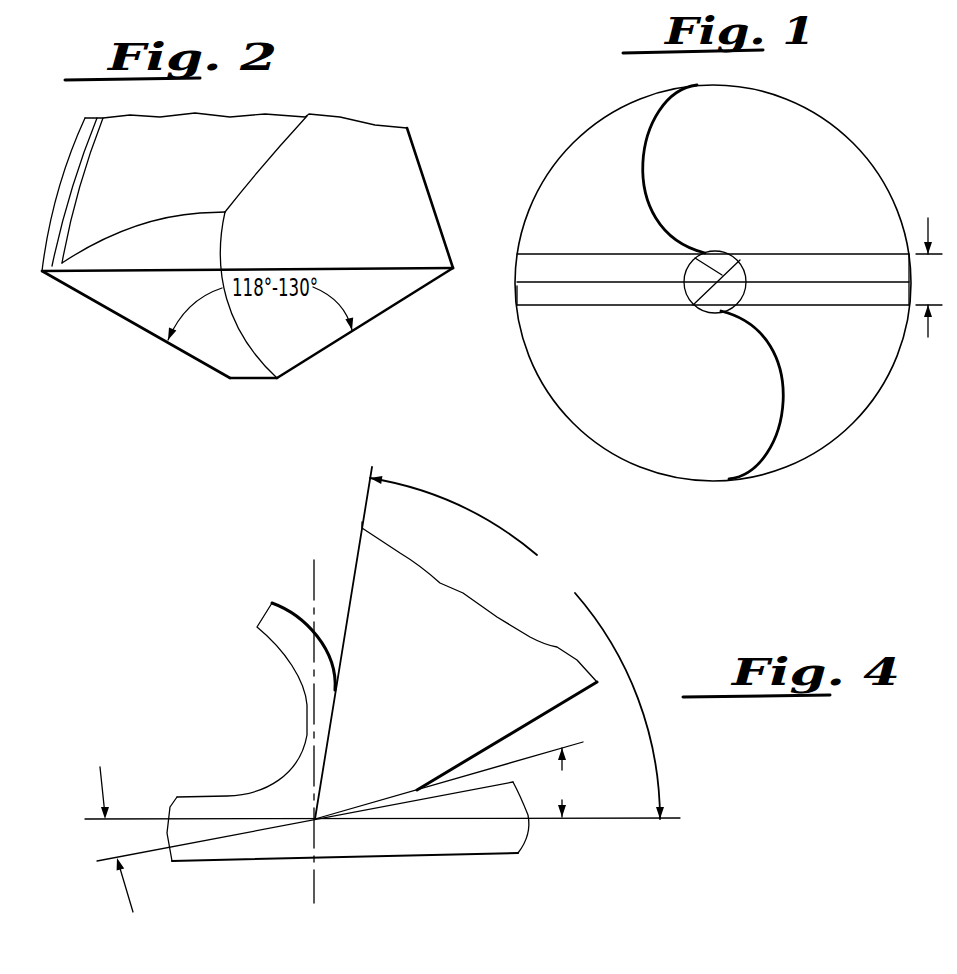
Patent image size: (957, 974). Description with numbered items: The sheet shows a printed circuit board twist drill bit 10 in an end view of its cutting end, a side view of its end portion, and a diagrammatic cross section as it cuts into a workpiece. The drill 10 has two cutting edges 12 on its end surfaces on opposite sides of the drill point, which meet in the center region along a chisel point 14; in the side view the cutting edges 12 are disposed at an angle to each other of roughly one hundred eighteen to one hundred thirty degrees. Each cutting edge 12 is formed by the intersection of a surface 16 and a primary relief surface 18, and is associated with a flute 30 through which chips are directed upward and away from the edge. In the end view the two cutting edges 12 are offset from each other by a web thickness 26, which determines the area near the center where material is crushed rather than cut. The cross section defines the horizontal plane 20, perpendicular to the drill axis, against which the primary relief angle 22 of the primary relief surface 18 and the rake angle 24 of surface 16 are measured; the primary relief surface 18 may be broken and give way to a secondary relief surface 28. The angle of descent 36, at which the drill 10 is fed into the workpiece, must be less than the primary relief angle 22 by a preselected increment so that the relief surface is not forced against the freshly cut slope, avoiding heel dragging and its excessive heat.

In FIG. 2, the twist drill bit 10 is at (446, 195).
In FIG. 1, the twist drill bit 10 is at (713, 488).
In FIG. 2, the cutting edge 12 is at (168, 338).
In FIG. 1, the cutting edge 12 is at (841, 228).
In FIG. 2, the chisel point 14 is at (233, 380).
In FIG. 1, the chisel point 14 is at (695, 266).
In FIG. 1, the surface 16 is at (813, 212).
In FIG. 4, the surface 16 is at (353, 565).
In FIG. 1, the primary relief surface 18 is at (863, 347).
In FIG. 4, the primary relief surface 18 is at (378, 806).
In FIG. 4, the horizontal plane 20 is at (537, 820).
In FIG. 4, the primary relief angle 22 is at (449, 780).
In FIG. 4, the rake angle 24 is at (517, 647).
In FIG. 1, the web thickness 26 is at (930, 277).
In FIG. 4, the secondary relief surface 28 is at (517, 729).
In FIG. 2, the flute 30 is at (147, 168).
In FIG. 4, the angle of descent 36 is at (300, 839).